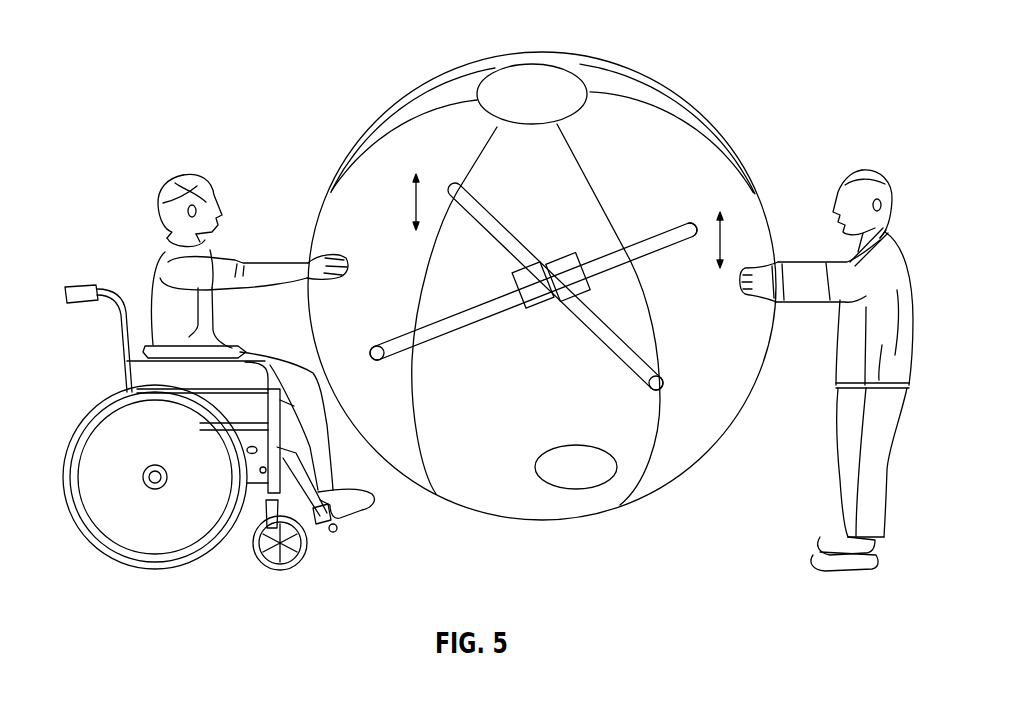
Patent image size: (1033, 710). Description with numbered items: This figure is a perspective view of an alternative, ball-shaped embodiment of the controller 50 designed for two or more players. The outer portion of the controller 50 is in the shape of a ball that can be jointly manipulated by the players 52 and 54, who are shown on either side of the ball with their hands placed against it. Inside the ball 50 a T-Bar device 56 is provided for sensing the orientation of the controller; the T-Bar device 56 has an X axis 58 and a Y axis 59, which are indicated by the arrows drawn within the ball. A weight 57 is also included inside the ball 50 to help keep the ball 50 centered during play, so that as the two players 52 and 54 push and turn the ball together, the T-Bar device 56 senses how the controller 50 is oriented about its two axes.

The controller 50 is at (542, 279).
The player 52 is at (221, 148).
The player 54 is at (854, 146).
The T-Bar device 56 is at (476, 342).
The weight 57 is at (630, 478).
The X axis 58 is at (694, 215).
The Y axis 59 is at (402, 205).